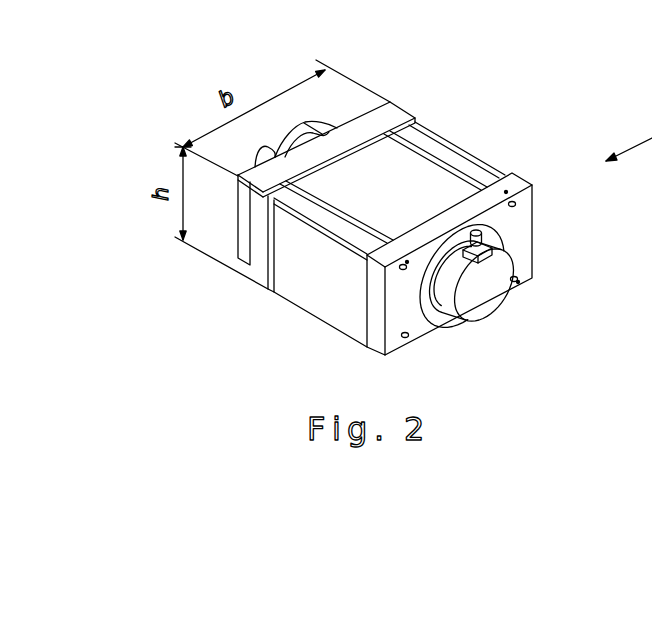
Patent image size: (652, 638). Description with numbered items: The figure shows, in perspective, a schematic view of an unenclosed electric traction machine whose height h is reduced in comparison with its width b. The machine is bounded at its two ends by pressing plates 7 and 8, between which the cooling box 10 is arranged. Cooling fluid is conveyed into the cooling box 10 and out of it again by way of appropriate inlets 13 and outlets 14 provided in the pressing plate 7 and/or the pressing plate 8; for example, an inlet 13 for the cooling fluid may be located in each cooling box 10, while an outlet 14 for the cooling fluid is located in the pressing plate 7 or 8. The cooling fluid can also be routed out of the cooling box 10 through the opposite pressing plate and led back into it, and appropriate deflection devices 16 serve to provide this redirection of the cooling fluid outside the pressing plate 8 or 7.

The pressing plate 7 is at (266, 262).
The pressing plate 8 is at (523, 169).
The cooling box 10 is at (430, 131).
The inlet 13 is at (407, 262).
The outlet 14 is at (417, 333).
The deflection device 16 is at (361, 111).